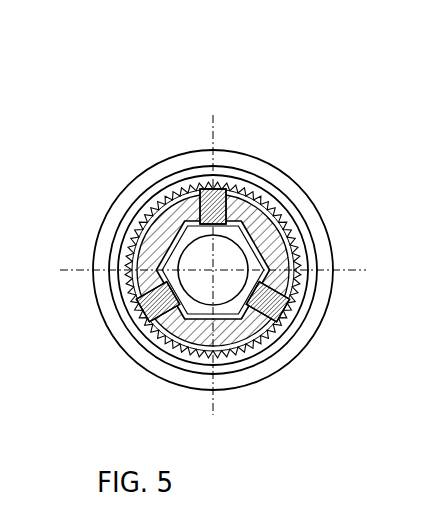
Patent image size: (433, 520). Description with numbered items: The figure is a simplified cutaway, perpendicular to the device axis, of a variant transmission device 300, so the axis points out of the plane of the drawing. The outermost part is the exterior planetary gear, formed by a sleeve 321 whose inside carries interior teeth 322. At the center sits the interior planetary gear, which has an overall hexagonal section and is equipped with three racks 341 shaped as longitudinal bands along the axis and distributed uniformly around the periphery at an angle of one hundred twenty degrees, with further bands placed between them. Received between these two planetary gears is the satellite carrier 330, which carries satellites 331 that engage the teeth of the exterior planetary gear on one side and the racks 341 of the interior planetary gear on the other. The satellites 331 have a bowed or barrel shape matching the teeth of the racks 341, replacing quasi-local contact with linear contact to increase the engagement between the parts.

The transmission device 300 is at (111, 78).
The sleeve 321 is at (250, 195).
The interior teeth 322 is at (262, 205).
The satellite carrier 330 is at (150, 212).
The satellites 331 is at (222, 196).
The racks 341 is at (188, 200).